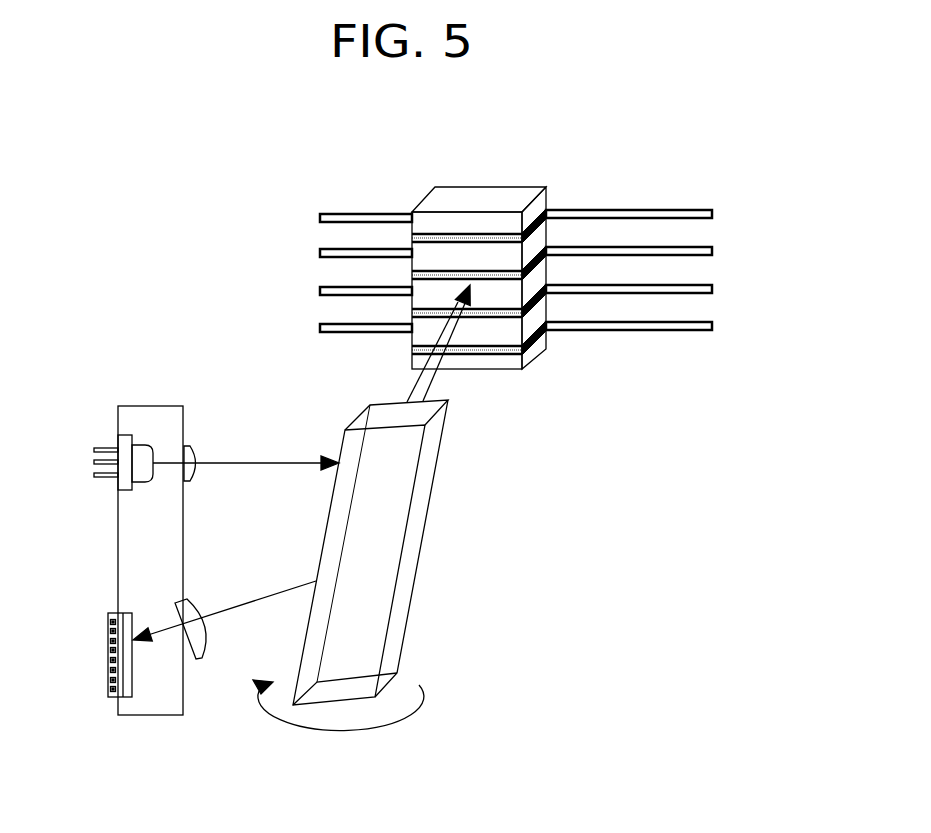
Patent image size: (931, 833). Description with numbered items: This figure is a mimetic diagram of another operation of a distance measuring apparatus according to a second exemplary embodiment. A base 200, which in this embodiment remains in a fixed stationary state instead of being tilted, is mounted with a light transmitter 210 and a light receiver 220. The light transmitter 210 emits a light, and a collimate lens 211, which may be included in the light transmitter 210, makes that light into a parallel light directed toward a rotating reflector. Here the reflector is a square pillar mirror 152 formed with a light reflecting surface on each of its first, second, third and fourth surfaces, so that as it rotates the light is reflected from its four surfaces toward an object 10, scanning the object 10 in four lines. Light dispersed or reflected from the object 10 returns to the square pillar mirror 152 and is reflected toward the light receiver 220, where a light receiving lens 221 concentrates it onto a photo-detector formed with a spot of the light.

The object 10 is at (497, 193).
The square pillar mirror 152 is at (400, 582).
The base 200 is at (149, 415).
The light transmitter 210 is at (142, 473).
The collimate lens 211 is at (190, 450).
The light receiver 220 is at (121, 659).
The light receiving lens 221 is at (190, 612).